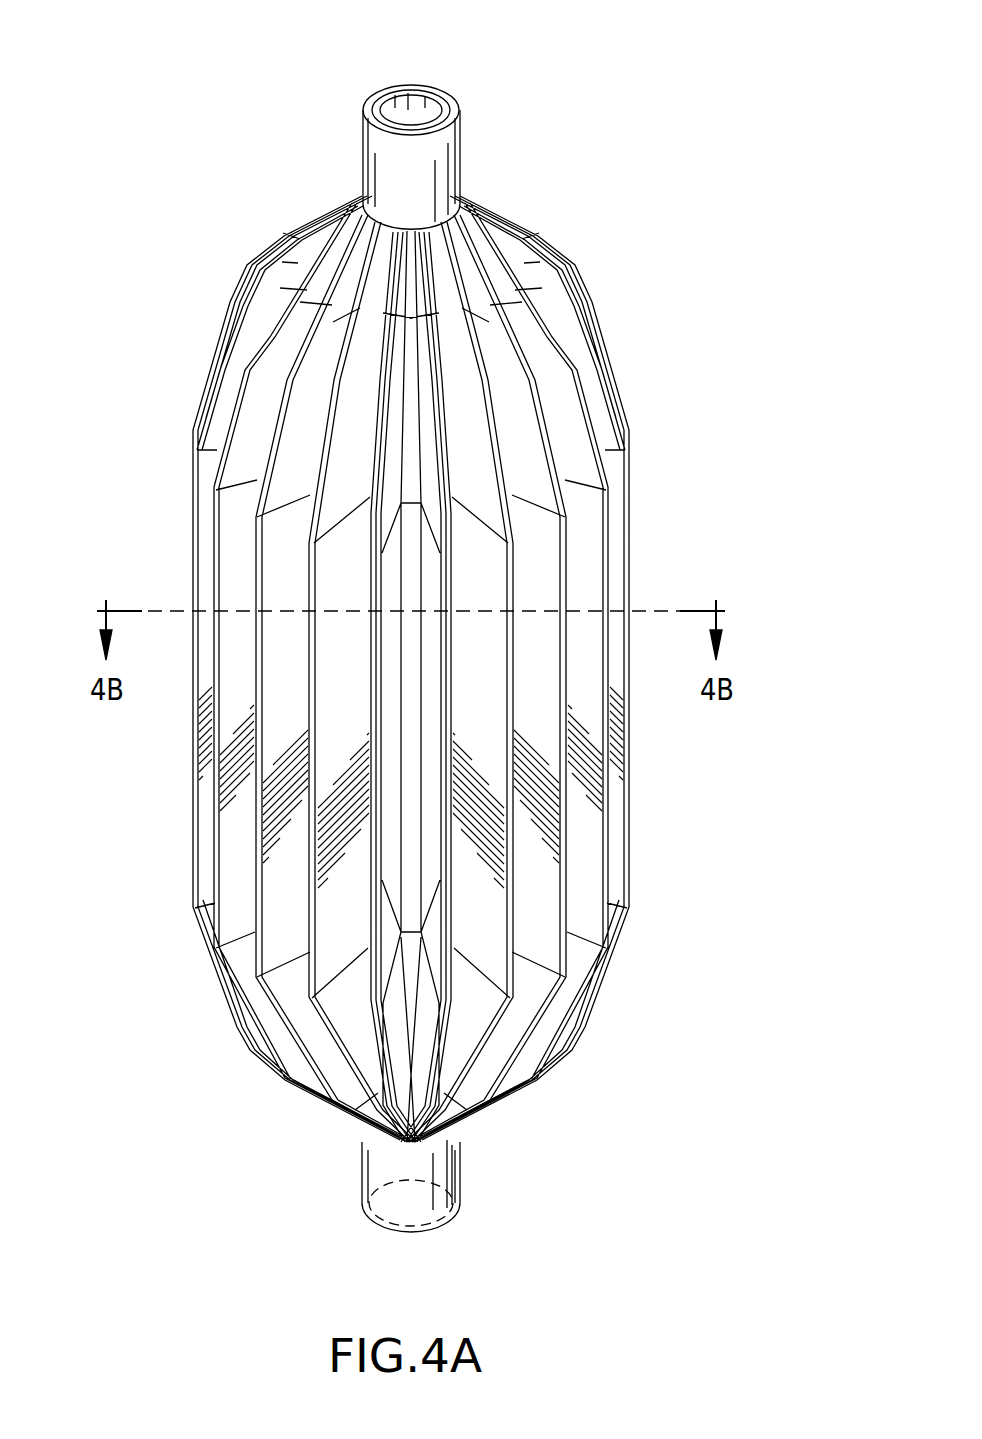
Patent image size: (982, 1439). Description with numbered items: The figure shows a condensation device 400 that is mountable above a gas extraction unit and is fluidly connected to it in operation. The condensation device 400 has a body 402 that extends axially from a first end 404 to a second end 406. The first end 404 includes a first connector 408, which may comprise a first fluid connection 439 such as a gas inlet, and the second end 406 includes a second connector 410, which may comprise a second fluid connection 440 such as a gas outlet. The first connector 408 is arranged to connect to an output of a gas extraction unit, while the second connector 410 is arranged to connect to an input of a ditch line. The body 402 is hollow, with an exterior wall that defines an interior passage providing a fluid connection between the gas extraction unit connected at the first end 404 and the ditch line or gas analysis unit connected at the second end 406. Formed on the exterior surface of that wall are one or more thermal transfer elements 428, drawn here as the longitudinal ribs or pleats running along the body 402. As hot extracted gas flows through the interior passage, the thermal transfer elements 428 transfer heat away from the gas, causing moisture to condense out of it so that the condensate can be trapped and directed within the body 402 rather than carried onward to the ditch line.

The condensation device 400 is at (157, 276).
The body 402 is at (345, 578).
The first end 404 is at (478, 1200).
The second end 406 is at (478, 145).
The first connector 408 is at (380, 1172).
The second connector 410 is at (387, 170).
The thermal transfer elements 428 is at (345, 440).
The first fluid connection 439 is at (356, 1226).
The second fluid connection 440 is at (390, 86).